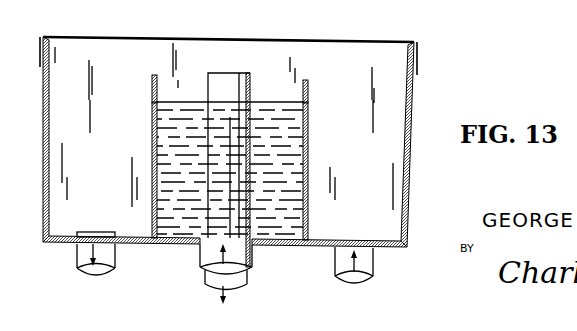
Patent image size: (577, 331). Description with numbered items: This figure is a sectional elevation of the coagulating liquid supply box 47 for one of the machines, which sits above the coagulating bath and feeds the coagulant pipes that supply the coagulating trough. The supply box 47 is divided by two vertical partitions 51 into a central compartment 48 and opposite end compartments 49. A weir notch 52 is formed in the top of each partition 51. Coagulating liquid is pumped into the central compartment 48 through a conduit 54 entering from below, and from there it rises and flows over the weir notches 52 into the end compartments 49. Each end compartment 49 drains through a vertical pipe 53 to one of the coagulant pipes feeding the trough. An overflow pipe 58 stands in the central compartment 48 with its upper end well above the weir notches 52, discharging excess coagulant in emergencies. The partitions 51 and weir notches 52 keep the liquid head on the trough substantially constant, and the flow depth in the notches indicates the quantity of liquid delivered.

The coagulating liquid supply box 47 is at (169, 18).
The central compartment 48 is at (283, 98).
The end compartments 49 is at (224, 128).
The vertical partitions 51 is at (150, 152).
The weir notch 52 is at (152, 85).
The vertical pipe 53 is at (84, 262).
The conduit 54 is at (247, 257).
The overflow pipe 58 is at (228, 80).